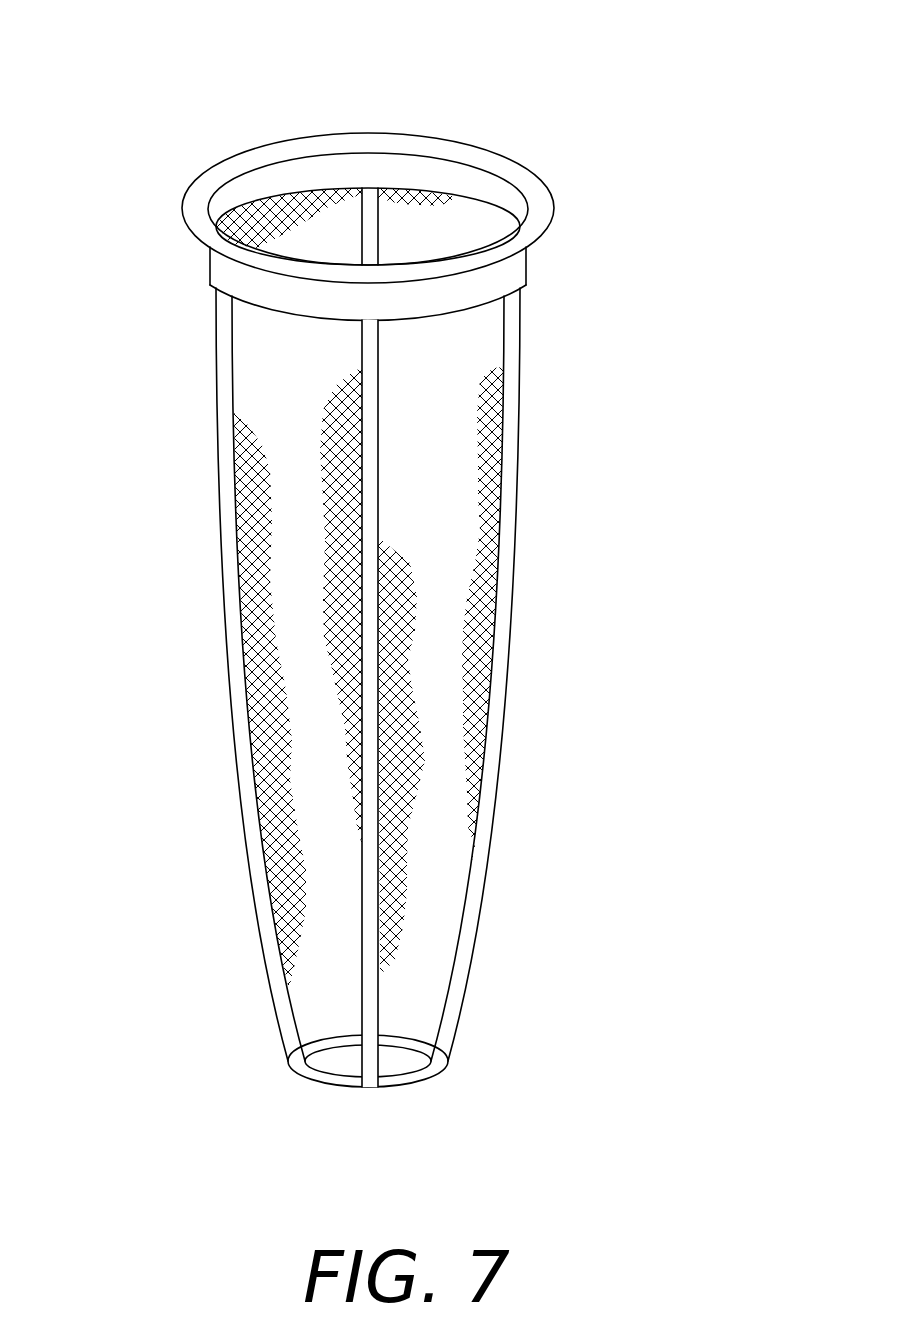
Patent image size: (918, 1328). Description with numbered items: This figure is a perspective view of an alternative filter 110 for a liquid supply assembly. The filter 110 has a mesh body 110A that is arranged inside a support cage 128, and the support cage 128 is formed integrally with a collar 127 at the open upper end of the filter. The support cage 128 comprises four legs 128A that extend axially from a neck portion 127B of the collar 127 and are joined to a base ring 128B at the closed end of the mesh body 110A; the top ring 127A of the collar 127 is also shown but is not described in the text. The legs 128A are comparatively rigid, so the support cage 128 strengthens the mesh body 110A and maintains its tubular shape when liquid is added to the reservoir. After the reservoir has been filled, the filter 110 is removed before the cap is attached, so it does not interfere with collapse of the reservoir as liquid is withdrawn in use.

The filter 110 is at (385, 576).
The mesh body 110A is at (260, 715).
The collar 127 is at (366, 194).
The collar top ring 127A is at (277, 150).
The neck portion 127B is at (235, 275).
The support cage 128 is at (390, 670).
The legs 128A is at (520, 487).
The base ring 128B is at (407, 1088).